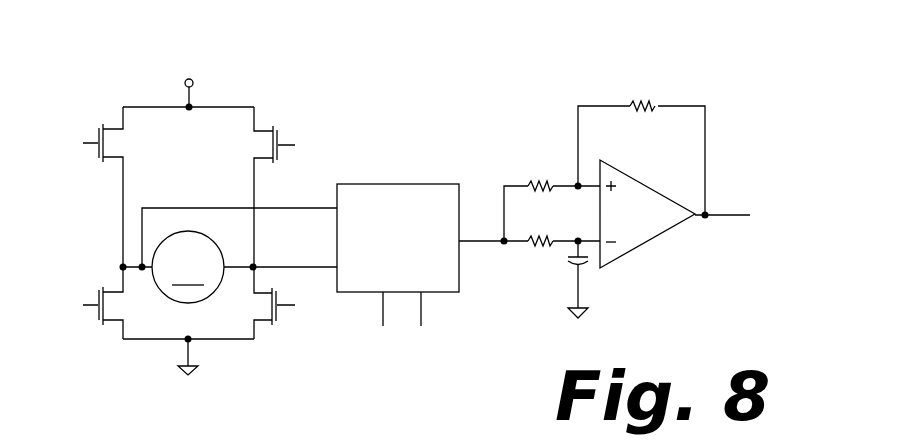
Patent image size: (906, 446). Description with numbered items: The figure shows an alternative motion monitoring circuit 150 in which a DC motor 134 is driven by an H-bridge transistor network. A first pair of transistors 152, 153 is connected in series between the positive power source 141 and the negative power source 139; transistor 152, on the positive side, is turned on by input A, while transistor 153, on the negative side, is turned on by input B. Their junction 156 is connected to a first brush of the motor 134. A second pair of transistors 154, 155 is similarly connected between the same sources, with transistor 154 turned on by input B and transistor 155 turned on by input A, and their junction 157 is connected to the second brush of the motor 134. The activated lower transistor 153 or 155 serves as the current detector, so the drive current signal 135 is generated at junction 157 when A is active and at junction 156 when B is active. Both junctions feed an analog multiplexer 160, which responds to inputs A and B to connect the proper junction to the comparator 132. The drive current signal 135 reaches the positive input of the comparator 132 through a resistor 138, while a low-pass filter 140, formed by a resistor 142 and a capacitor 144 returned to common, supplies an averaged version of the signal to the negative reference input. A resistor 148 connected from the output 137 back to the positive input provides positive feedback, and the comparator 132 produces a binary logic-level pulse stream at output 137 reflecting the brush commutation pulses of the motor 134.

The motion monitoring circuit 150 is at (447, 75).
The positive power source 141 is at (185, 79).
The transistor 152 is at (99, 128).
The transistor 154 is at (278, 136).
The transistor 153 is at (100, 288).
The transistor 155 is at (278, 315).
The DC motor 134 is at (175, 252).
The junction 156 is at (122, 266).
The junction 157 is at (257, 264).
The negative power source 139 is at (182, 373).
The analog multiplexer 160 is at (376, 186).
The drive current signal 135 is at (478, 236).
The low-pass filter 140 is at (541, 267).
The resistor 142 is at (542, 233).
The resistor 138 is at (538, 184).
The resistor 148 is at (652, 105).
The comparator 132 is at (605, 172).
The capacitor 144 is at (584, 268).
The output 137 is at (730, 214).